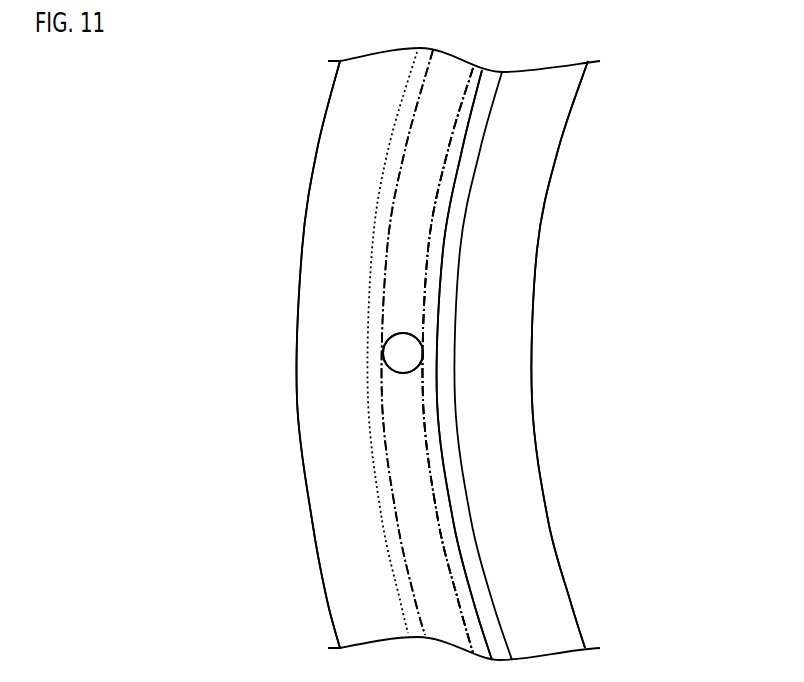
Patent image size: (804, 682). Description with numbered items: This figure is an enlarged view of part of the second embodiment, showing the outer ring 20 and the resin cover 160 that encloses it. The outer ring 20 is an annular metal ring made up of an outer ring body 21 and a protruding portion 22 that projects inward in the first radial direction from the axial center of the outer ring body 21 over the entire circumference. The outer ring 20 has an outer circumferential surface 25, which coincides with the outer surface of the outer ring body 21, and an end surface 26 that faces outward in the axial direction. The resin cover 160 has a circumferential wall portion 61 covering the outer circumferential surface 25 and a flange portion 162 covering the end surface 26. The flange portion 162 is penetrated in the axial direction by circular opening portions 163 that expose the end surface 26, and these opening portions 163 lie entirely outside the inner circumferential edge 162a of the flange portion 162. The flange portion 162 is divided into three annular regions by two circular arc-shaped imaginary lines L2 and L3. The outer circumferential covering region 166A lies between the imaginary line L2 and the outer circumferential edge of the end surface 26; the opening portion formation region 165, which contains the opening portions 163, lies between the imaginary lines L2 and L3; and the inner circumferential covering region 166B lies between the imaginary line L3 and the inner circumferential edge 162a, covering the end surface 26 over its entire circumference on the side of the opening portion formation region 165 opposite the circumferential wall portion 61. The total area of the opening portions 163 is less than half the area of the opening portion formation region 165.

The resin cover 160 is at (317, 134).
The circumferential wall portion 61 is at (305, 213).
The outer circumferential surface 25 is at (367, 346).
The circular arc-shaped imaginary line L2 is at (387, 453).
The outer circumferential covering region 166A is at (387, 498).
The inner circumferential covering region 166B is at (450, 545).
The opening portion formation region 165 is at (432, 577).
The circular arc-shaped imaginary line L3 is at (437, 508).
The flange portion 162 is at (407, 447).
The inner circumferential edge 162a is at (467, 130).
The outer ring body 21 is at (482, 562).
The protruding portion 22 is at (567, 583).
The outer ring 20 is at (548, 214).
The opening portion 163 is at (392, 335).
The end surface 26 is at (402, 360).